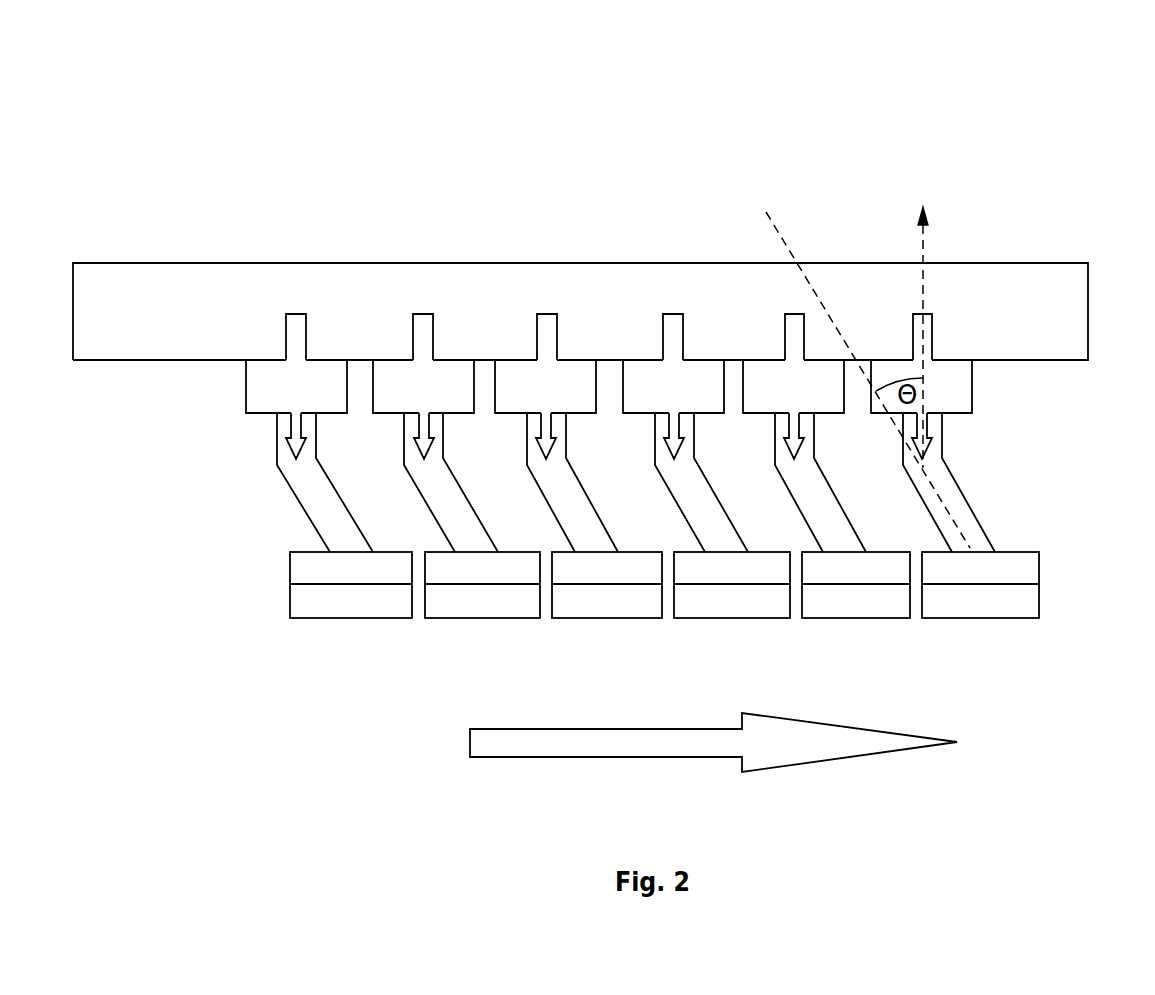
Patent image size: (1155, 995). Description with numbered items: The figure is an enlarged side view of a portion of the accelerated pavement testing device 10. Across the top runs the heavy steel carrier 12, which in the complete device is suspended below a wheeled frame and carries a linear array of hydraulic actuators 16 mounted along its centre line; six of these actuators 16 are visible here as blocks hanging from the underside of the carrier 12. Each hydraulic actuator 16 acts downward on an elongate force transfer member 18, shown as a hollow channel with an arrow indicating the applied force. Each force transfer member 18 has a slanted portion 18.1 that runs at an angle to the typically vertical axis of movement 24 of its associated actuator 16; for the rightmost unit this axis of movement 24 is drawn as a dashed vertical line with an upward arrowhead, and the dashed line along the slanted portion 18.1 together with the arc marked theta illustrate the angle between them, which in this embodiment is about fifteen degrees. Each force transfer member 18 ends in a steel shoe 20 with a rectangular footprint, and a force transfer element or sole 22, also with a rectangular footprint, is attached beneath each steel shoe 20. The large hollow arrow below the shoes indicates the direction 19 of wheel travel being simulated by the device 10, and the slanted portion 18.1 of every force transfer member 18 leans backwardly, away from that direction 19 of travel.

The accelerated pavement testing device 10 is at (160, 125).
The carrier 12 is at (1038, 275).
The hydraulic actuator 16 is at (258, 383).
The force transfer member 18 is at (297, 479).
The slanted portion 18.1 is at (965, 522).
The direction of wheel travel 19 is at (560, 729).
The steel shoe 20 is at (1030, 568).
The sole 22 is at (977, 602).
The axis of movement 24 is at (925, 251).